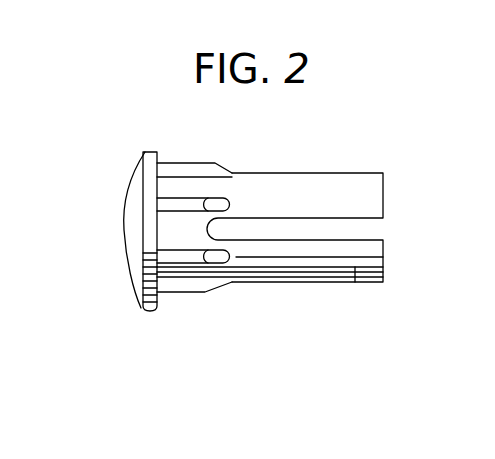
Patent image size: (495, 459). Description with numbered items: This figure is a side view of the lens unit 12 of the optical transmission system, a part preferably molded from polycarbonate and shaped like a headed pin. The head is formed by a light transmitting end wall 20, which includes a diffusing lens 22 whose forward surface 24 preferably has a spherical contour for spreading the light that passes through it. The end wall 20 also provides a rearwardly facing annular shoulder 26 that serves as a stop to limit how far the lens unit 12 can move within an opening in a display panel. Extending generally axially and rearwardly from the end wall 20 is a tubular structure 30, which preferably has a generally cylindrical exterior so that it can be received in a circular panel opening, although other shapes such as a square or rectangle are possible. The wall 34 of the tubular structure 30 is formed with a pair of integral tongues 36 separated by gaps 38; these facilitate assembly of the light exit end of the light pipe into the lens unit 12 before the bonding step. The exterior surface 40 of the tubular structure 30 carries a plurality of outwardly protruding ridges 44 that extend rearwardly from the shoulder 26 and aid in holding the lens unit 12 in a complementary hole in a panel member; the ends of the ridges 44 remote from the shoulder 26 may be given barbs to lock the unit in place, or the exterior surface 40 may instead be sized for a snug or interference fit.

The lens unit 12 is at (243, 316).
The light transmitting end wall 20 is at (147, 151).
The diffusing lens 22 is at (128, 233).
The forward surface 24 is at (127, 203).
The rearwardly facing annular shoulder 26 is at (160, 151).
The tubular structure 30 is at (250, 168).
The wall 34 is at (183, 230).
The tongues 36 is at (386, 242).
The gaps 38 is at (282, 228).
The exterior surface 40 is at (355, 283).
The ridges 44 is at (178, 293).